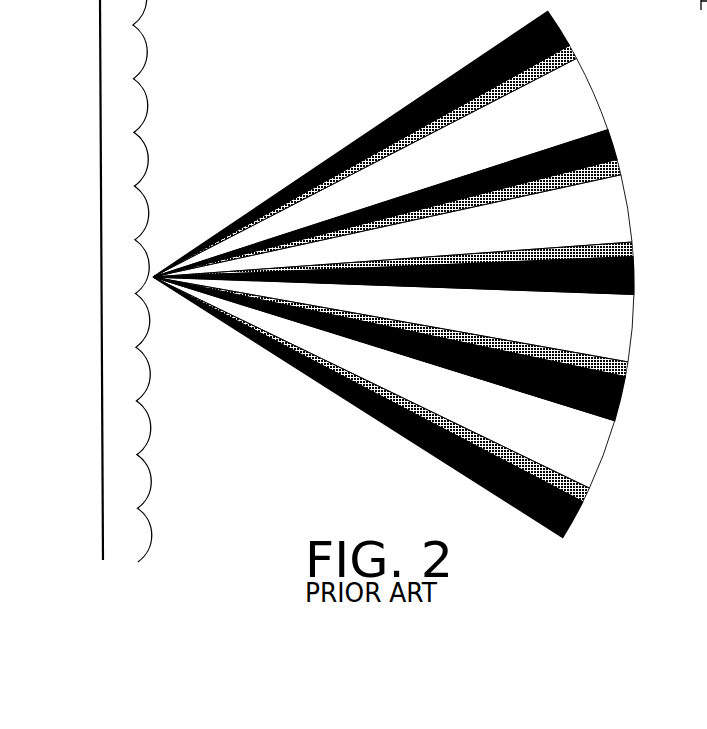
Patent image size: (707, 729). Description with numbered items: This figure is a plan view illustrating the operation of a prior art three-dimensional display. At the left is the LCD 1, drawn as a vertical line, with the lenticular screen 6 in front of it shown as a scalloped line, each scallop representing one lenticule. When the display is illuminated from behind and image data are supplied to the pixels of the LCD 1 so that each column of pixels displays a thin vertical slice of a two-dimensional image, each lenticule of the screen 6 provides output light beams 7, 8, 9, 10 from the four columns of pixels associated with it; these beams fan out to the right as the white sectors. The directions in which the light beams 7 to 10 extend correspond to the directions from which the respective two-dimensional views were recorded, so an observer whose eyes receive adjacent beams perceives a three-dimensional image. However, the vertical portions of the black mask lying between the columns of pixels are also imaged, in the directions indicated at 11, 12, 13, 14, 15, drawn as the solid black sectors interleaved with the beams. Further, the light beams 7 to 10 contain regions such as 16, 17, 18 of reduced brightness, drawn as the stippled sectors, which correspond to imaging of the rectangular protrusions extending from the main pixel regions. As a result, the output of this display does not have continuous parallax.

The LCD 1 is at (103, 560).
The screen 6 is at (128, 533).
The output light beam 7 is at (592, 452).
The output light beam 8 is at (613, 327).
The output light beam 9 is at (593, 217).
The output light beam 10 is at (570, 98).
The black mask imaging direction 11 is at (573, 523).
The black mask imaging direction 12 is at (623, 404).
The black mask imaging direction 13 is at (633, 274).
The black mask imaging direction 14 is at (610, 142).
The black mask imaging direction 15 is at (558, 27).
The region of reduced brightness 16 is at (587, 495).
The region of reduced brightness 17 is at (628, 370).
The region of reduced brightness 18 is at (632, 245).